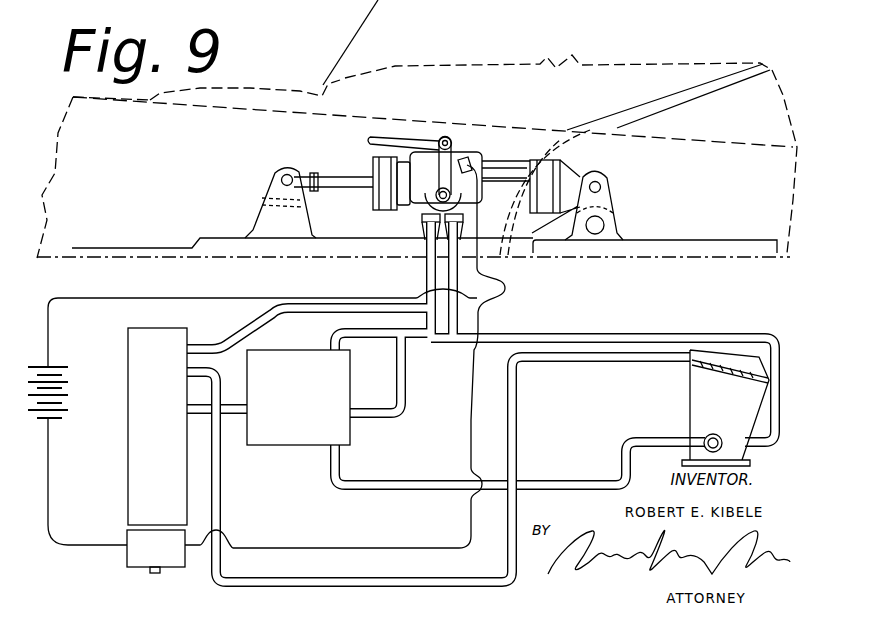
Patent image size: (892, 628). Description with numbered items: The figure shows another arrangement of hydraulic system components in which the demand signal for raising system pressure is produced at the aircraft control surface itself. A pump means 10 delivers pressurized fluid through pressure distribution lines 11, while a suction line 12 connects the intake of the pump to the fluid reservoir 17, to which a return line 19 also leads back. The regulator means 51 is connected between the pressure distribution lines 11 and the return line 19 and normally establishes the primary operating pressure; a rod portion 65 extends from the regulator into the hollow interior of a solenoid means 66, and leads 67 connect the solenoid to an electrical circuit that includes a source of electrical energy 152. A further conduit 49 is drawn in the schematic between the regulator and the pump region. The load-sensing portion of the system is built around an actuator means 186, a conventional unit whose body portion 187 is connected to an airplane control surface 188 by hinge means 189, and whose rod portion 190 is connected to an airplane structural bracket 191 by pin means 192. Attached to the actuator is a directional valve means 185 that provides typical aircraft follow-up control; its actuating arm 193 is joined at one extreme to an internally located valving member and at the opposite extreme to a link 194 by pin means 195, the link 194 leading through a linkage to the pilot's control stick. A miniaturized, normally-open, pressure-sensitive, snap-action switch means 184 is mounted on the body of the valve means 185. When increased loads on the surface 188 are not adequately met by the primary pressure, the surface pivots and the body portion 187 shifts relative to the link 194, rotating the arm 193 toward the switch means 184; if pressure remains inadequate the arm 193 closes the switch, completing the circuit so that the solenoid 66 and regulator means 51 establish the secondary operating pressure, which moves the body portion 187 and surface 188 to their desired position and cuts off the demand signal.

The pump means 10 is at (711, 403).
The pressure distribution lines 11 is at (324, 314).
The suction line 12 is at (560, 478).
The fluid reservoir 17 is at (288, 410).
The return line 19 is at (358, 339).
The conduit 49 is at (222, 484).
The regulator means 51 is at (148, 405).
The rod portion 65 is at (158, 573).
The solenoid means 66 is at (146, 555).
The leads 67 is at (98, 542).
The source of electrical energy 152 is at (66, 407).
The switch means 184 is at (470, 155).
The valve means 185 is at (457, 152).
The actuator means 186 is at (373, 209).
The body portion 187 is at (509, 160).
The airplane control surface 188 is at (647, 249).
The hinge means 189 is at (601, 187).
The rod portion 190 is at (332, 176).
The airplane structural bracket 191 is at (257, 221).
The pin means 192 is at (282, 172).
The actuating arm 193 is at (421, 203).
The link 194 is at (386, 137).
The pin means 195 is at (447, 137).